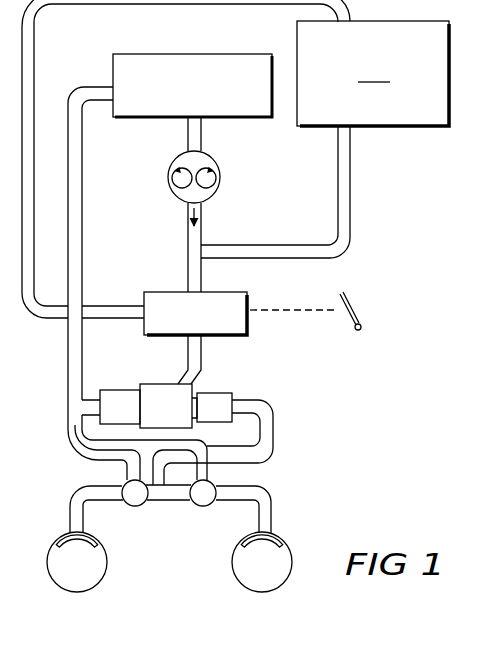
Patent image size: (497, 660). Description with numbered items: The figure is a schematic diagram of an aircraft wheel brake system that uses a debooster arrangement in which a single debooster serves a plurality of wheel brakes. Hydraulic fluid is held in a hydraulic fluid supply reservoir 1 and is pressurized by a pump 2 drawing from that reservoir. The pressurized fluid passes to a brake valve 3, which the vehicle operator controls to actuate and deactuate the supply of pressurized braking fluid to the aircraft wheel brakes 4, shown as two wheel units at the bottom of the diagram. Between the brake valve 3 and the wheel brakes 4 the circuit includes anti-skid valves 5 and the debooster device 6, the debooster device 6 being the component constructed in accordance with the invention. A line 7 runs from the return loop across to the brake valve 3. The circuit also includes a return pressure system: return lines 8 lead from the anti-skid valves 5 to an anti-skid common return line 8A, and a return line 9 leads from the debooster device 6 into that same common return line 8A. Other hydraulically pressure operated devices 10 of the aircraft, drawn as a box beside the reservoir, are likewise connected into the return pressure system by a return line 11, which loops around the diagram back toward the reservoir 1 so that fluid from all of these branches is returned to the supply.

The hydraulic fluid supply reservoir 1 is at (240, 62).
The pump 2 is at (224, 175).
The brake valve 3 is at (236, 299).
The aircraft wheel brakes 4 is at (60, 334).
The anti-skid valves 5 is at (138, 512).
The debooster device 6 is at (218, 382).
The pipe line 7 is at (122, 313).
The return lines 8 is at (95, 458).
The anti-skid common return line 8A is at (70, 377).
The return line 9 is at (90, 405).
The hydraulically pressure operated devices 10 is at (325, 139).
The return line 11 is at (34, 66).